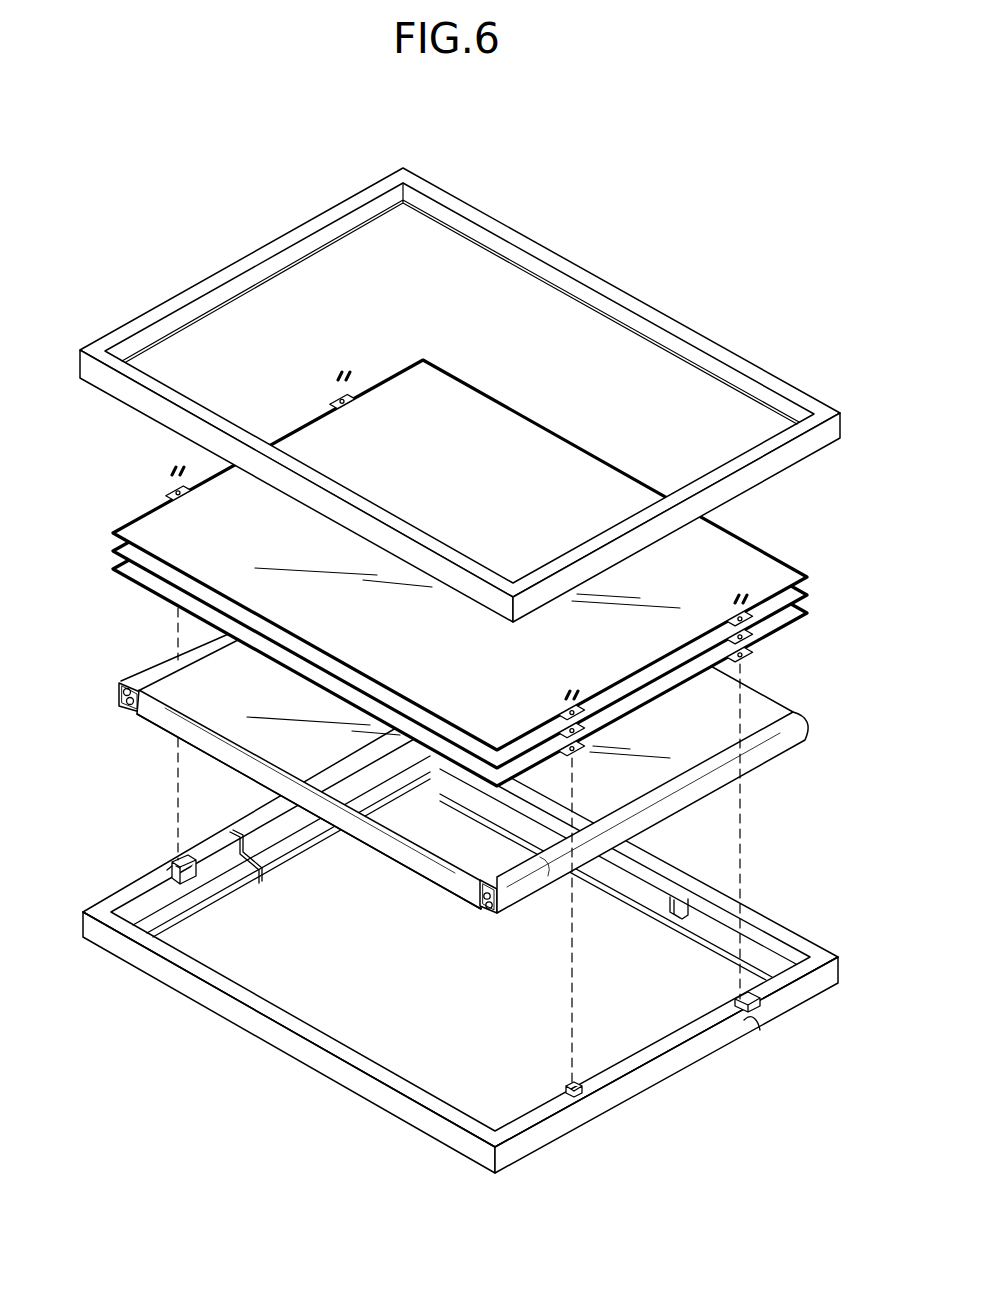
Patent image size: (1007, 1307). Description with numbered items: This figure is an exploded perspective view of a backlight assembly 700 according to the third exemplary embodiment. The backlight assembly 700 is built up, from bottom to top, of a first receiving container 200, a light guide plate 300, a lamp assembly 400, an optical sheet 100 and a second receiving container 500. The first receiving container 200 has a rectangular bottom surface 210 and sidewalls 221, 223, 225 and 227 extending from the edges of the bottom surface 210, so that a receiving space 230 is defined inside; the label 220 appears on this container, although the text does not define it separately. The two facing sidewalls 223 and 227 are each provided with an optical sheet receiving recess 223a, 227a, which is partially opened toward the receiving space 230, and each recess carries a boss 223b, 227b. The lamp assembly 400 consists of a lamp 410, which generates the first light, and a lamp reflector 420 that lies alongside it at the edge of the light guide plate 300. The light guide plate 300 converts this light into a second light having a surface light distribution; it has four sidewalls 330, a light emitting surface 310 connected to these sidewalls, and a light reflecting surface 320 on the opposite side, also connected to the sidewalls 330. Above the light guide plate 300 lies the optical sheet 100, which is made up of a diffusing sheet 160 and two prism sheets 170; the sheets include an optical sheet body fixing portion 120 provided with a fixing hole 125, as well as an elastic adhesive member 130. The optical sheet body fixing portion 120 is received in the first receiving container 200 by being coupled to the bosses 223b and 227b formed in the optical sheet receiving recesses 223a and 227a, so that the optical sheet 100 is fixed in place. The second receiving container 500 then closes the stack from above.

The optical sheet 100 is at (489, 573).
The optical sheet body fixing portion 120 is at (475, 591).
The fixing hole 125 is at (736, 616).
The elastic adhesive member 130 is at (745, 595).
The diffusing sheet 160 is at (792, 617).
The prism sheet 170 is at (809, 576).
The first receiving container 200 is at (462, 953).
The bottom surface 210 is at (652, 918).
The sidewall 220 is at (460, 940).
The sidewall 221 is at (464, 868).
The sidewall 223 is at (167, 830).
The optical sheet receiving recess 223a is at (167, 870).
The boss 223b is at (147, 834).
The sidewall 225 is at (358, 1060).
The sidewall 227 is at (653, 1048).
The optical sheet receiving recess 227a is at (853, 1044).
The boss 227b is at (745, 1024).
The receiving space 230 is at (481, 979).
The light guide plate 300 is at (430, 760).
The light emitting surface 310 is at (150, 701).
The light reflecting surface 320 is at (178, 735).
The sidewall 330 is at (299, 795).
The lamp assembly 400 is at (146, 658).
The lamp 410 is at (119, 683).
The lamp reflector 420 is at (150, 667).
The second receiving container 500 is at (457, 189).
The backlight assembly 700 is at (459, 664).